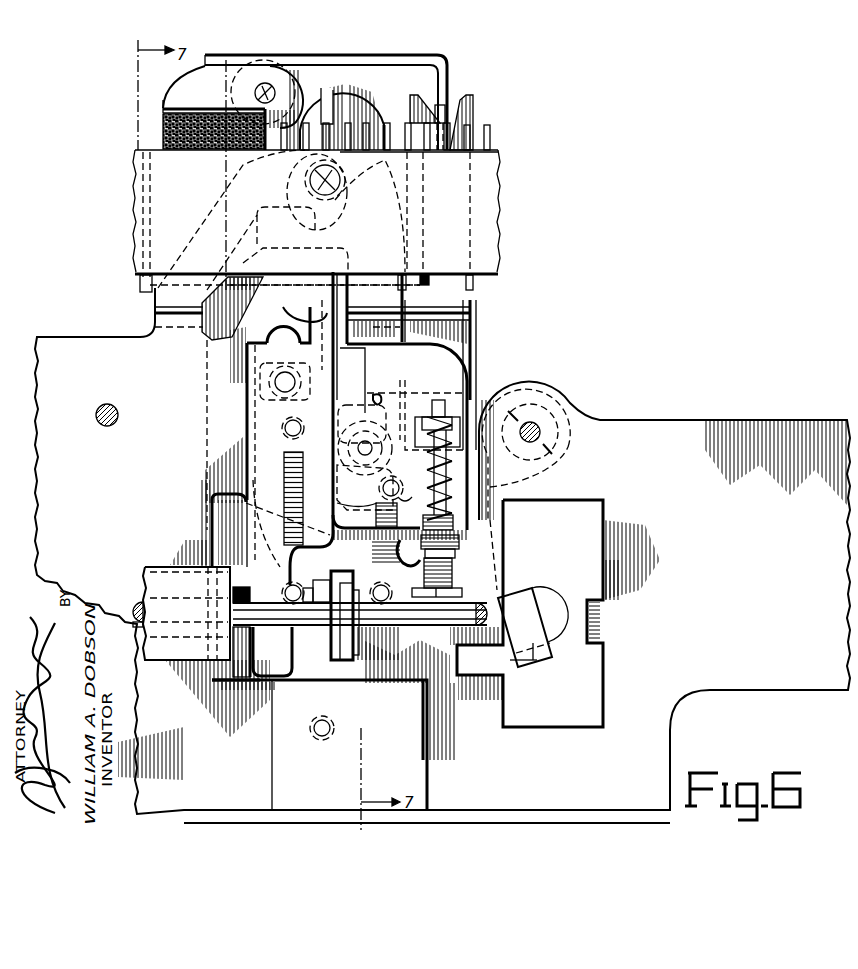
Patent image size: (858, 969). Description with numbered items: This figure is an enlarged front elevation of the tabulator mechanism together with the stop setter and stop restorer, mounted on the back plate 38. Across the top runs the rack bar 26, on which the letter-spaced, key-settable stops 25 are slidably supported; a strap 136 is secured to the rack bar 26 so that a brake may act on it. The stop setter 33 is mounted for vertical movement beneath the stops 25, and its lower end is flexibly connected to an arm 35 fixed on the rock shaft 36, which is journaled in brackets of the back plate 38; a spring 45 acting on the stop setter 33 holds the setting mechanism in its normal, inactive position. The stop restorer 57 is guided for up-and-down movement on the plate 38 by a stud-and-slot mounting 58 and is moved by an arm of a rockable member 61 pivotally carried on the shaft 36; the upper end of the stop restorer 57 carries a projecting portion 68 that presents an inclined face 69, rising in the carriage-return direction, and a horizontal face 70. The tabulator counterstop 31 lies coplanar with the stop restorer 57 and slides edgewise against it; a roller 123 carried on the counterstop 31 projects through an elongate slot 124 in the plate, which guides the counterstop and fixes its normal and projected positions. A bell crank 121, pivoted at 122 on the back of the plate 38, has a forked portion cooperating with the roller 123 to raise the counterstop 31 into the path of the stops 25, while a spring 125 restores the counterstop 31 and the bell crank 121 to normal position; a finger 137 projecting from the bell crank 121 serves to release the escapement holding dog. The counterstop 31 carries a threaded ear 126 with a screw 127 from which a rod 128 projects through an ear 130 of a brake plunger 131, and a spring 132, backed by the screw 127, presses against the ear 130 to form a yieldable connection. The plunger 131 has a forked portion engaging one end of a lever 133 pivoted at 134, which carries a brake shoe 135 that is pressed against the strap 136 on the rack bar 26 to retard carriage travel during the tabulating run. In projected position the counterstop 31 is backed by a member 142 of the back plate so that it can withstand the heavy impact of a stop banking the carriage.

The key-settable stops 25 is at (493, 133).
The rack bar 26 is at (200, 193).
The tabulator counterstop 31 is at (438, 374).
The stop setter 33 is at (367, 94).
The arm 35 is at (251, 549).
The rock shaft 36 is at (298, 626).
The back plate 38 is at (765, 635).
The spring 45 is at (290, 462).
The stop restorer 57 is at (287, 657).
The stud-and-slot mounting 58 is at (290, 423).
The rockable member 61 is at (191, 595).
The projecting portion 68 is at (306, 345).
The inclined face 69 is at (325, 297).
The horizontal face 70 is at (327, 313).
The bell crank 121 is at (546, 612).
The pivot 122 is at (548, 432).
The roller 123 is at (357, 514).
The elongate slot 124 is at (378, 395).
The spring 125 is at (370, 572).
The threaded ear 126 is at (455, 578).
The screw 127 is at (458, 593).
The rod 128 is at (399, 488).
The ear 130 is at (427, 410).
The brake plunger 131 is at (474, 322).
The spring 132 is at (414, 500).
The lever 133 is at (173, 92).
The pivot 134 is at (256, 88).
The brake shoe 135 is at (163, 130).
The strap 136 is at (497, 151).
The finger 137 is at (537, 660).
The member 142 is at (295, 261).